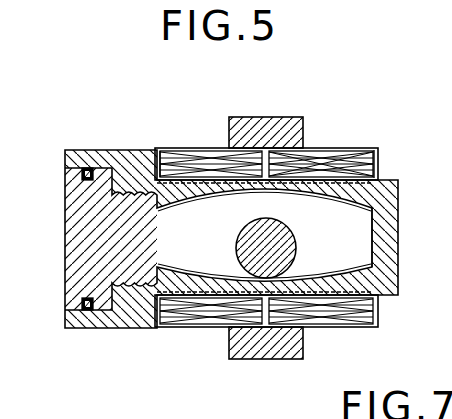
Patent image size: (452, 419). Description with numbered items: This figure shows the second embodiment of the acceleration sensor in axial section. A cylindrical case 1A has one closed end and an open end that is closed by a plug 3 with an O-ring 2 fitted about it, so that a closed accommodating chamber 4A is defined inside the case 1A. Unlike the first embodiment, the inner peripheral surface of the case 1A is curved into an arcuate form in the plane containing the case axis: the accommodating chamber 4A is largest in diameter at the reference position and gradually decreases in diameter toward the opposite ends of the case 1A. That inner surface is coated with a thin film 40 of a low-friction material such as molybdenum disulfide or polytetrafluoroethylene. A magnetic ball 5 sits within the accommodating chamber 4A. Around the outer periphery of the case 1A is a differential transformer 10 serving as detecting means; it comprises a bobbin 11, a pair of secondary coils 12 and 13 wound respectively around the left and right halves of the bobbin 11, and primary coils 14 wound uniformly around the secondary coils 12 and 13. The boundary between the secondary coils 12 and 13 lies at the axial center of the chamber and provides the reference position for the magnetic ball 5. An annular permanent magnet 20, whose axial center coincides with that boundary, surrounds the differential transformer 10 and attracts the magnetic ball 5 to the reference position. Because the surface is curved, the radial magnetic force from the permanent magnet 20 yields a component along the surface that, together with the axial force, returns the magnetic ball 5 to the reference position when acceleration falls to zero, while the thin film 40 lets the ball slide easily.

The case 1A is at (388, 180).
The O-ring 2 is at (88, 312).
The plug 3 is at (72, 227).
The accommodating chamber 4A is at (348, 233).
The magnetic ball 5 is at (302, 250).
The differential transformer 10 is at (291, 120).
The bobbin 11 is at (339, 158).
The secondary coil 12 is at (173, 170).
The secondary coil 13 is at (350, 167).
The primary coil 14 is at (213, 152).
The permanent magnet 20 is at (254, 356).
The thin film 40 is at (200, 270).